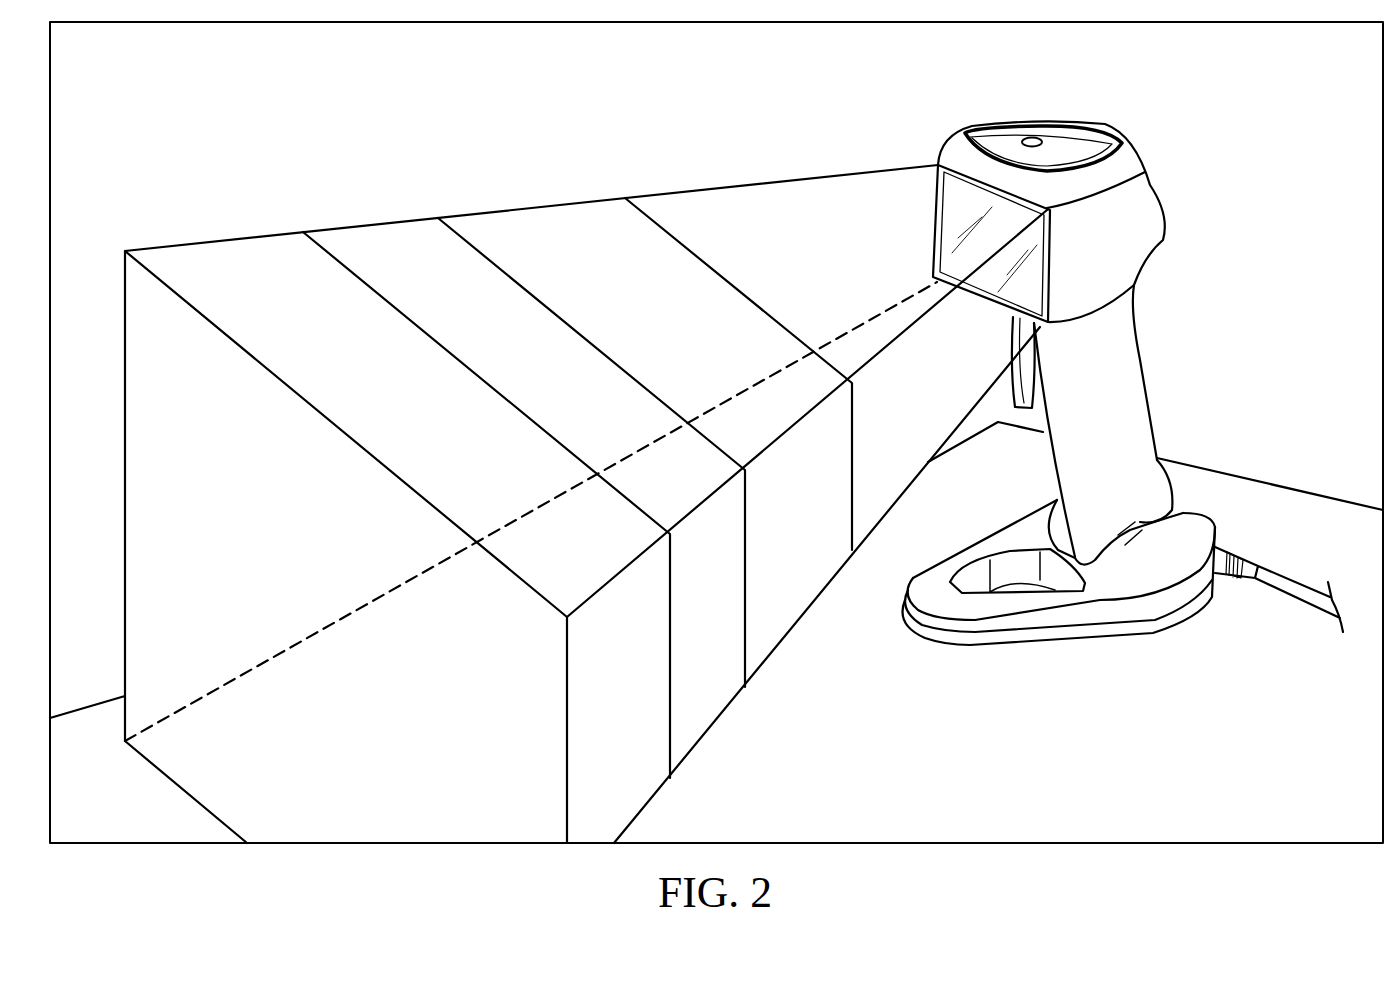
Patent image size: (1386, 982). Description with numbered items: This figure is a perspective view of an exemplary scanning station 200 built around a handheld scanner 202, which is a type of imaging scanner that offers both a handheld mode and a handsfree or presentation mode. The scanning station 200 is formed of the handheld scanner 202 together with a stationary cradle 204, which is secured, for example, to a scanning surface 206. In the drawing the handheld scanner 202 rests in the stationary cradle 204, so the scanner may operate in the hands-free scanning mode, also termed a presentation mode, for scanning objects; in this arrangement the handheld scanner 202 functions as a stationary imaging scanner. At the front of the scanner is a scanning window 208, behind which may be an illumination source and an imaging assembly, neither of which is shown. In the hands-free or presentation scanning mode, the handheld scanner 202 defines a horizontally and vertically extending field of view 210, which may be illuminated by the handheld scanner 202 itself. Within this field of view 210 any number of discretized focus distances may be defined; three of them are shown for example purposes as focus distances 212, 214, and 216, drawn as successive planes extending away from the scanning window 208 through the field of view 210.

The scanning station 200 is at (1104, 360).
The handheld scanner 202 is at (1167, 182).
The stationary cradle 204 is at (1118, 597).
The scanning surface 206 is at (1273, 502).
The scanning window 208 is at (962, 203).
The field of view 210 is at (188, 245).
The focus distance 212 is at (625, 200).
The focus distance 214 is at (435, 218).
The focus distance 216 is at (300, 230).